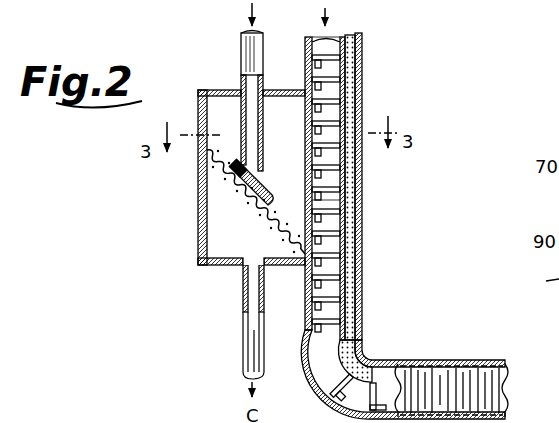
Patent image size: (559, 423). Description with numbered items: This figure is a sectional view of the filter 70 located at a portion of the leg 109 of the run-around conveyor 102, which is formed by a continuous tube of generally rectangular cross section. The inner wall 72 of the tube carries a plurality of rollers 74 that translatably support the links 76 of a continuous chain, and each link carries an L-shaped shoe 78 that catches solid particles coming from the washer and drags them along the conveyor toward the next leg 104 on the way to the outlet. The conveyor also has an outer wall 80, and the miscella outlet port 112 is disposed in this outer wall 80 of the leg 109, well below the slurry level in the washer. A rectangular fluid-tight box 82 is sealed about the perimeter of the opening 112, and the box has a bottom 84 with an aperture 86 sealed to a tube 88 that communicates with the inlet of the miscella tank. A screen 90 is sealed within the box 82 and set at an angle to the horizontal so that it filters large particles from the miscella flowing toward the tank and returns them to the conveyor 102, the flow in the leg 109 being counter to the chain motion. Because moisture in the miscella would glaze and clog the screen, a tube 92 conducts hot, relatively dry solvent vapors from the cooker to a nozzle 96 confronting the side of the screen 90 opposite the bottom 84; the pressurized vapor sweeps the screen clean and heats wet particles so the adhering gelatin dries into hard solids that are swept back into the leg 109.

The filter 70 is at (195, 194).
The inner wall 72 is at (362, 250).
The rollers 74 is at (362, 272).
The links 76 is at (362, 300).
The L-shaped shoe 78 is at (313, 344).
The outer wall 80 is at (388, 216).
The fluid-tight box 82 is at (201, 238).
The bottom 84 is at (212, 264).
The aperture 86 is at (254, 258).
The tube 88 is at (257, 333).
The screen 90 is at (227, 176).
The tube 92 is at (236, 114).
The nozzle 96 is at (263, 178).
The run-around conveyor 102 is at (388, 226).
The leg 104 is at (478, 384).
The leg 109 is at (362, 70).
The miscella outlet port 112 is at (312, 206).